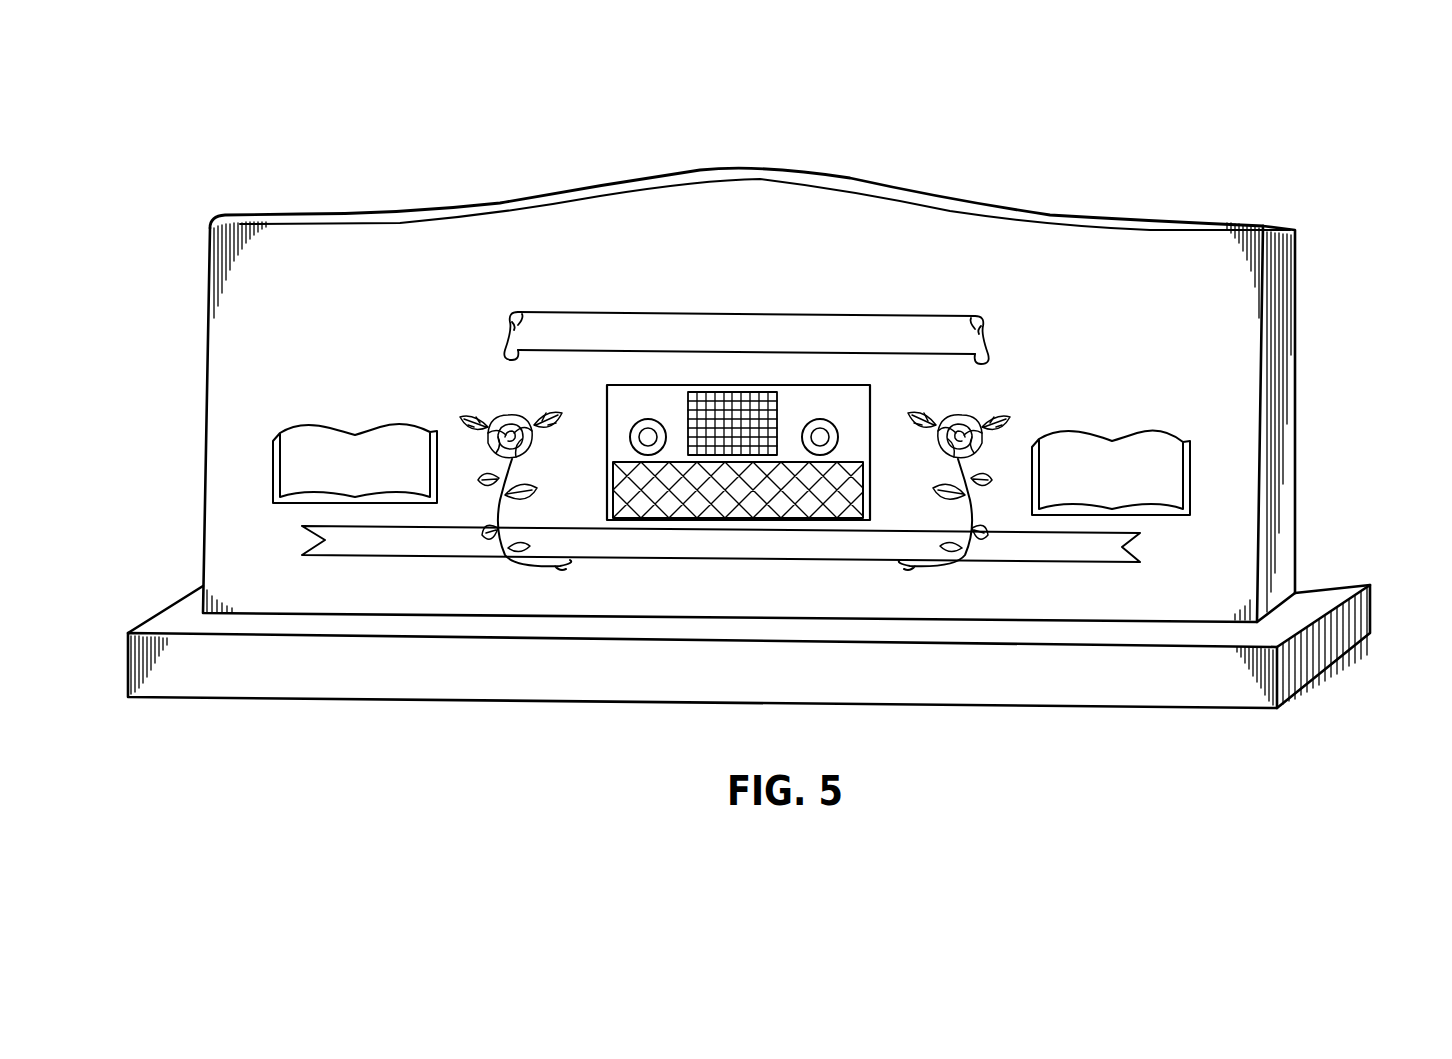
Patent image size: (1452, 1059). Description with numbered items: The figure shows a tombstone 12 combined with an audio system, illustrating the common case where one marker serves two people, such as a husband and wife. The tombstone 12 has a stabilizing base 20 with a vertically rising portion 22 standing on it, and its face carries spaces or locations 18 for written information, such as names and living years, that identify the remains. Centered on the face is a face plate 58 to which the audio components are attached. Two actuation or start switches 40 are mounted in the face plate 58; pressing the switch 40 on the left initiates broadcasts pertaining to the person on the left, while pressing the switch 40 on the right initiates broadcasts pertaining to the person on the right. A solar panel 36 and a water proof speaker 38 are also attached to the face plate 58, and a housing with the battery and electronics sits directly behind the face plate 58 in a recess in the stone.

The tombstone 12 is at (868, 173).
The space or location for written information 18 is at (750, 312).
The stabilizing base 20 is at (1330, 583).
The vertically rising portion 22 is at (1035, 212).
The solar panel 36 is at (787, 520).
The water proof speaker 38 is at (707, 392).
The actuation or start switch 40 is at (802, 453).
The face plate 58 is at (627, 395).